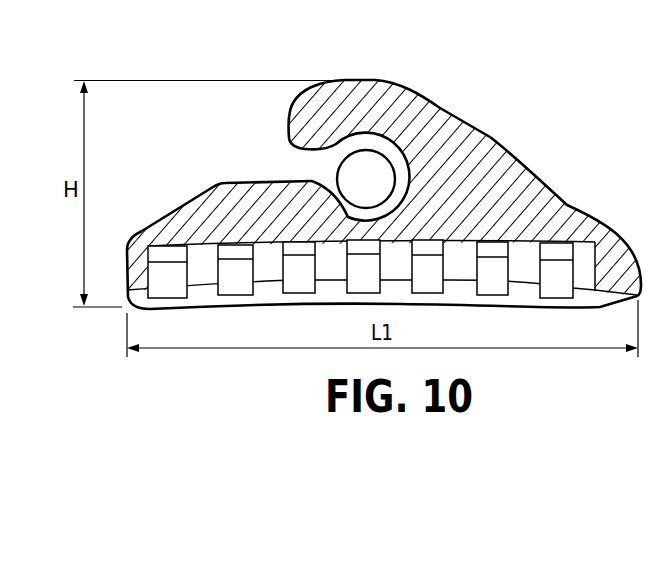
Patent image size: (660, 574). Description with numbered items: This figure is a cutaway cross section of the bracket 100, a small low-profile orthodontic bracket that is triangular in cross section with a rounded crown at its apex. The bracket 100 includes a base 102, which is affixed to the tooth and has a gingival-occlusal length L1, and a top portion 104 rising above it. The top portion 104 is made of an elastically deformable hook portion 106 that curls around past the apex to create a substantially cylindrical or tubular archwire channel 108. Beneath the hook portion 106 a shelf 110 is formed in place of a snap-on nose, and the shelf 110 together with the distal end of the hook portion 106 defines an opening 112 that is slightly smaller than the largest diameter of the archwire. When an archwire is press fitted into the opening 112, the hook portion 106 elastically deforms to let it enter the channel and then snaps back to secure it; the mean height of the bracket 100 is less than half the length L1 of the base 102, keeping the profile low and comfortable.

The bracket 100 is at (526, 126).
The base 102 is at (233, 305).
The top portion 104 is at (566, 205).
The hook portion 106 is at (382, 80).
The archwire channel 108 is at (372, 179).
The shelf 110 is at (243, 183).
The opening 112 is at (322, 176).